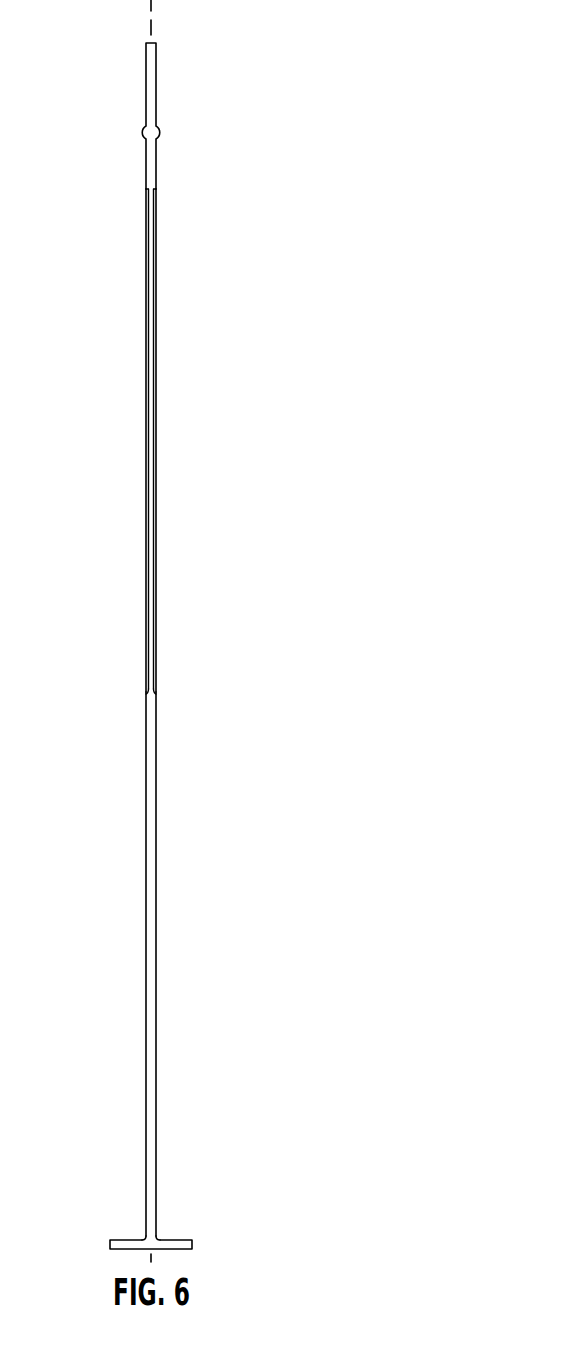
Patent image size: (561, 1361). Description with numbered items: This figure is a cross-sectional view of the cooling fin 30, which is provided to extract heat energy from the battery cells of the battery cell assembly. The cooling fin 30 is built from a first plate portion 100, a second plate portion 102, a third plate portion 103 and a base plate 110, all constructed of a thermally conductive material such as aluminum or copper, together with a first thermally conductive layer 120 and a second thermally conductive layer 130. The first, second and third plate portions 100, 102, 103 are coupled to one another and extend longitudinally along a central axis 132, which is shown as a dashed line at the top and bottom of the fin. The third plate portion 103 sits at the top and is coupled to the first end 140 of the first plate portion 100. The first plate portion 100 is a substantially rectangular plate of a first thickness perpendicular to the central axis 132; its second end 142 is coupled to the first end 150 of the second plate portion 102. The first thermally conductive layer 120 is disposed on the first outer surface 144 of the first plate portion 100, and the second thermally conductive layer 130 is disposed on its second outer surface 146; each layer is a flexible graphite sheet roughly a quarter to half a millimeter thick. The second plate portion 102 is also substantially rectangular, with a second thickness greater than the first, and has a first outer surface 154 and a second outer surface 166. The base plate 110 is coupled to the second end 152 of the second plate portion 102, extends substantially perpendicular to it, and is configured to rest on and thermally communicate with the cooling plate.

The cooling fin 30 is at (280, 228).
The central axis 132 is at (150, 28).
The third plate portion 103 is at (152, 104).
The first end 140 is at (151, 191).
The first plate portion 100 is at (149, 476).
The second outer surface 146 is at (145, 397).
The first outer surface 144 is at (156, 397).
The first thermally conductive layer 120 is at (157, 628).
The second thermally conductive layer 130 is at (145, 629).
The first end 150 is at (147, 690).
The second end 142 is at (155, 693).
The second plate portion 102 is at (152, 852).
The second outer surface 166 is at (145, 977).
The first outer surface 154 is at (157, 983).
The base plate 110 is at (183, 1242).
The second end 152 is at (143, 1238).